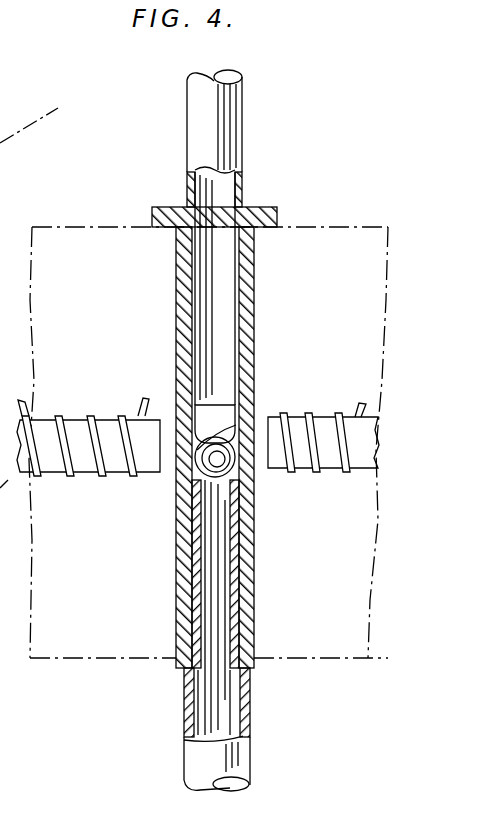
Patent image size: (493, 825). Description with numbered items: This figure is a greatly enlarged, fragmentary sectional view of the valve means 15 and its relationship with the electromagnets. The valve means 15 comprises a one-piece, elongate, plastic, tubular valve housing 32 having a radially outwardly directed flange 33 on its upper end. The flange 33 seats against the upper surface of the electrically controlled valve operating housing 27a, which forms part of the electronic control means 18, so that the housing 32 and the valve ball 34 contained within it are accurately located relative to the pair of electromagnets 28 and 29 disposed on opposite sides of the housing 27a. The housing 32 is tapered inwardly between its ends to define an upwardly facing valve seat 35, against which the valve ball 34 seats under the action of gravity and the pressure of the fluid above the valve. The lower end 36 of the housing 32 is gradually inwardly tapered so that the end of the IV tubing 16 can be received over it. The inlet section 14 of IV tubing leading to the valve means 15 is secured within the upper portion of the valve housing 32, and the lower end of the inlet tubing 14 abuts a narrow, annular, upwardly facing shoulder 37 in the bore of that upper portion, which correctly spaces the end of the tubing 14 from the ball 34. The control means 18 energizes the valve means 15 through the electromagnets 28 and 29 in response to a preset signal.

The inlet section of IV tubing 14 is at (241, 106).
The valve means 15 is at (221, 417).
The IV tubing 16 is at (251, 702).
The electronic control means 18 is at (104, 662).
The valve operating housing 27a is at (333, 224).
The electromagnet 28 is at (104, 420).
The electromagnet 29 is at (324, 470).
The tubular valve housing 32 is at (177, 327).
The flange 33 is at (262, 212).
The valve ball 34 is at (205, 455).
The valve seat 35 is at (200, 463).
The lower end of the housing 36 is at (180, 552).
The annular shoulder 37 is at (177, 397).